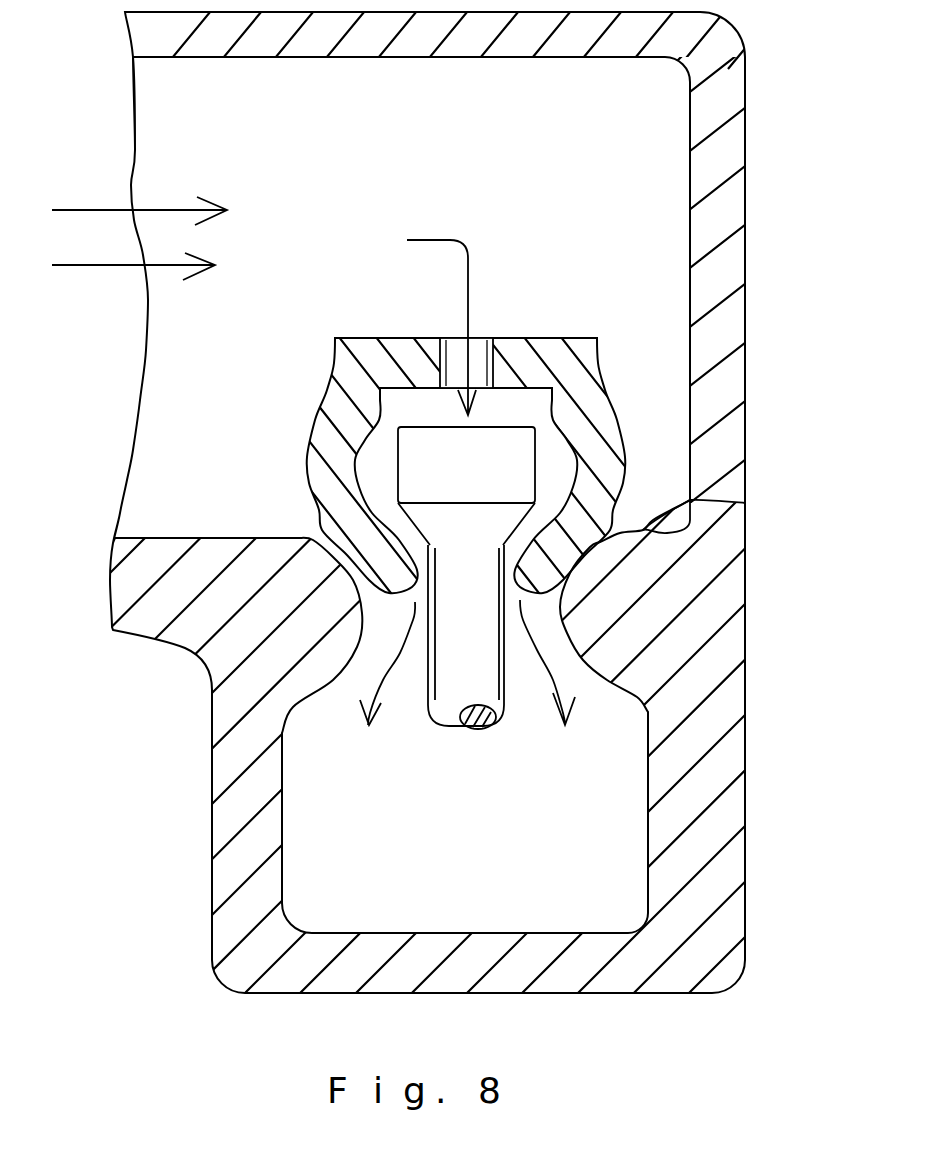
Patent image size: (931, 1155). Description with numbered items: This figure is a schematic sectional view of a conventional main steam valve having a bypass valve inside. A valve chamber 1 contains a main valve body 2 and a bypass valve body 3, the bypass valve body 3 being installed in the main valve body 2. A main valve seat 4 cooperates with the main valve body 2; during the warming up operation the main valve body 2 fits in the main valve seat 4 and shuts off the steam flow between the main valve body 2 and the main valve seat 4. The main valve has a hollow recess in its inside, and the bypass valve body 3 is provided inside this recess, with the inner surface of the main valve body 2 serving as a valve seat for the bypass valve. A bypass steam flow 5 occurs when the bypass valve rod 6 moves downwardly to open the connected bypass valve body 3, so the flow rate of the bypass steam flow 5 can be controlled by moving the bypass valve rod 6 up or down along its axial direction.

The valve chamber 1 is at (745, 95).
The main valve body 2 is at (335, 400).
The bypass valve body 3 is at (540, 453).
The main valve seat 4 is at (745, 503).
The bypass steam flow 5 is at (73, 208).
The bypass valve rod 6 is at (507, 687).